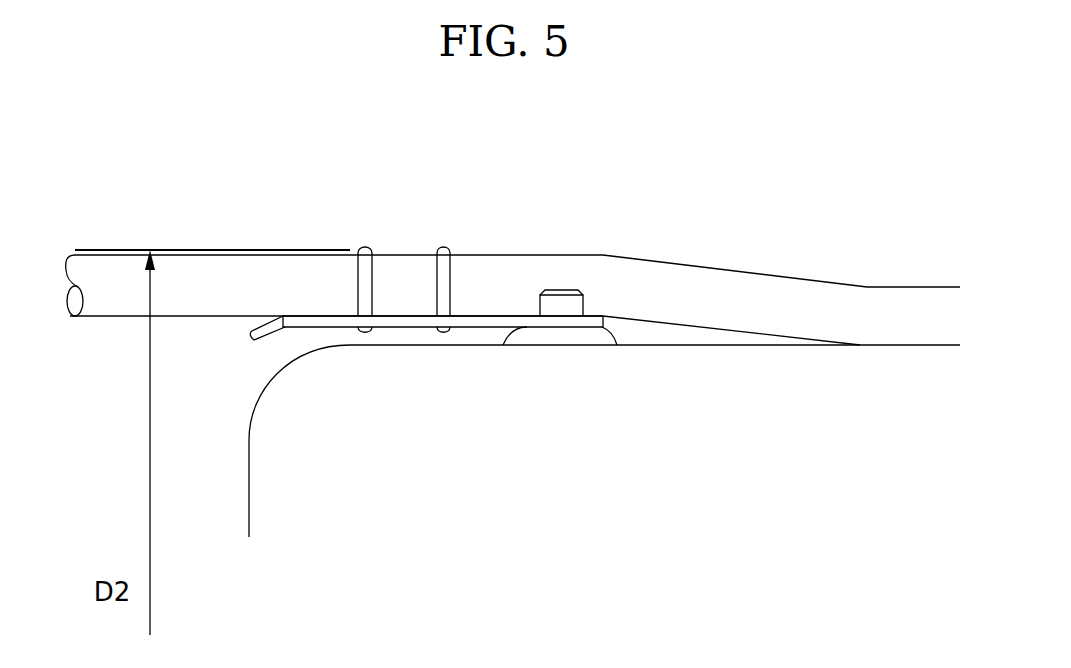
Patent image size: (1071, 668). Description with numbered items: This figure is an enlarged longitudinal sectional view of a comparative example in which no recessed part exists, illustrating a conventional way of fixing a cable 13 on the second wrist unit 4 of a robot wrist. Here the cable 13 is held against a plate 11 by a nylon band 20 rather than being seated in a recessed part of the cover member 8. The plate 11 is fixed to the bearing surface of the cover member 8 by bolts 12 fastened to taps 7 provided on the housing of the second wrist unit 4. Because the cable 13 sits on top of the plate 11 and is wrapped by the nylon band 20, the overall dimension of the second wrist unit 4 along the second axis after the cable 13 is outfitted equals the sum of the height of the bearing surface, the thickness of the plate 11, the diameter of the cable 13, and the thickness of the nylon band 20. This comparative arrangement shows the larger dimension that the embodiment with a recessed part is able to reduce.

The second wrist unit 4 is at (737, 327).
The tap 7 is at (588, 314).
The cover member 8 is at (898, 344).
The plate 11 is at (308, 314).
The bolt 12 is at (558, 290).
The cable 13 is at (98, 319).
The nylon band 20 is at (374, 276).